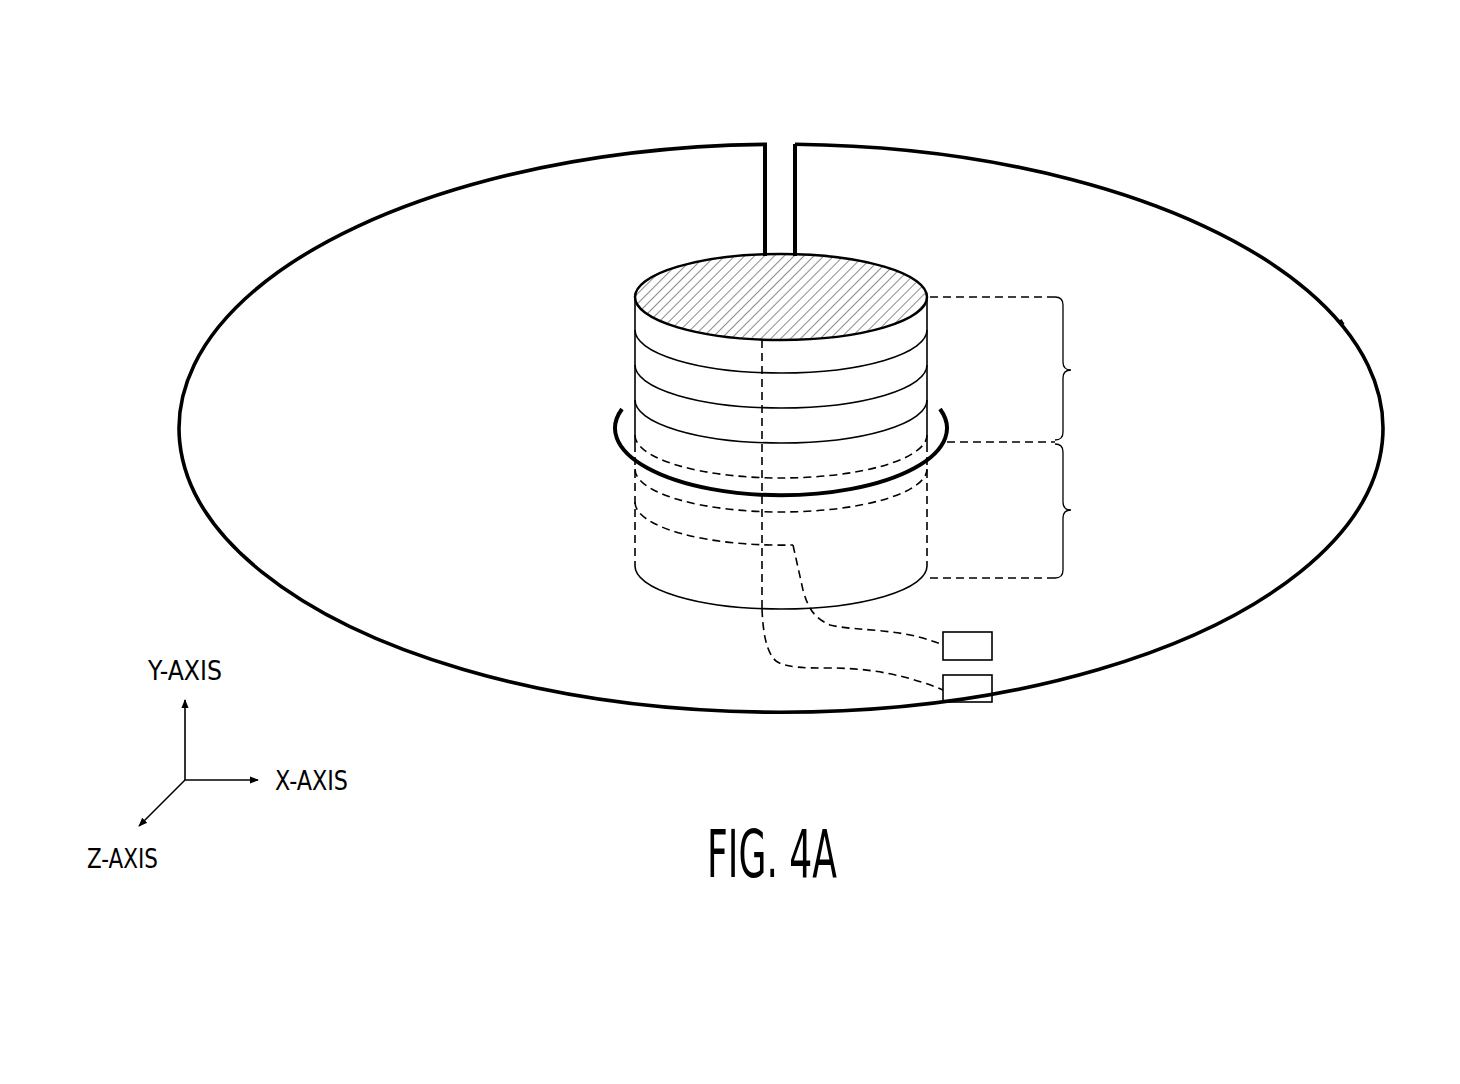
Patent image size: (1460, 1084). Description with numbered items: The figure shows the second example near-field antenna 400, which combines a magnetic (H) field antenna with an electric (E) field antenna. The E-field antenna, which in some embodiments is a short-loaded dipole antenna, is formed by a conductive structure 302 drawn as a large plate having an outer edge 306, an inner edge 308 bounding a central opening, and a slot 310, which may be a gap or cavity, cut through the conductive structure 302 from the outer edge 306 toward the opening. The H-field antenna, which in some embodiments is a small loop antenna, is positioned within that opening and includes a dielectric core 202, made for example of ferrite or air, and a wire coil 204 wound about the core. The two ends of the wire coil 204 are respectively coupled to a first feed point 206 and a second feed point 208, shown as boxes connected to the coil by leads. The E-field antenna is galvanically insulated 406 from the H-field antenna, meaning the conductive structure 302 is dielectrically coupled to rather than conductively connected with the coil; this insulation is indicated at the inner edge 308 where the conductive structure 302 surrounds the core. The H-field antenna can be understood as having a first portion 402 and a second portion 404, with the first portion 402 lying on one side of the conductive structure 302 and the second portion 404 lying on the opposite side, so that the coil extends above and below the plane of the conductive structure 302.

The second near-field antenna 400 is at (242, 134).
The conductive structure 302 is at (1200, 283).
The outer edge 306 is at (1343, 325).
The slot 310 is at (778, 160).
The dielectric core 202 is at (836, 298).
The wire coil 204 is at (694, 395).
The inner edge 308 is at (620, 448).
The galvanic insulation 406 is at (618, 404).
The first portion 402 is at (1027, 369).
The second portion 404 is at (1027, 511).
The first feed point 206 is at (992, 642).
The second feed point 208 is at (992, 700).